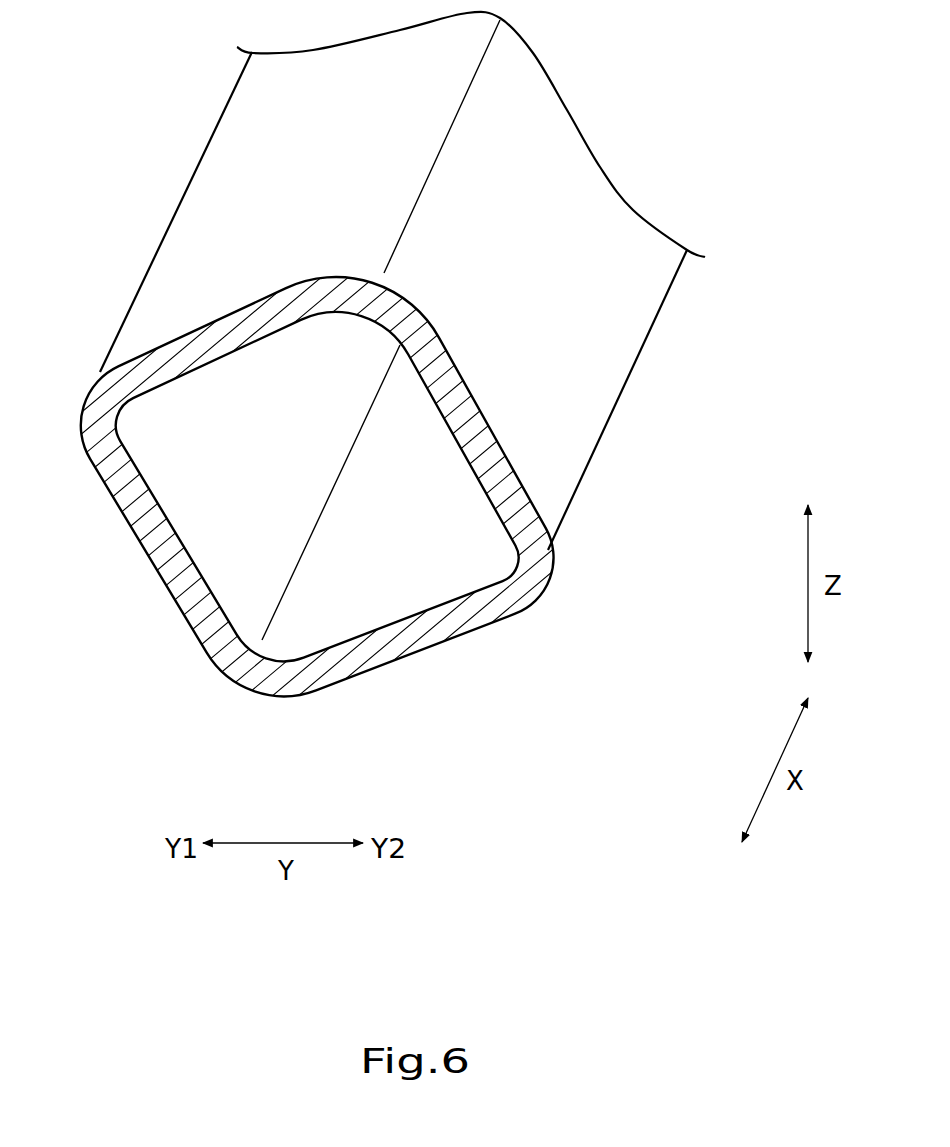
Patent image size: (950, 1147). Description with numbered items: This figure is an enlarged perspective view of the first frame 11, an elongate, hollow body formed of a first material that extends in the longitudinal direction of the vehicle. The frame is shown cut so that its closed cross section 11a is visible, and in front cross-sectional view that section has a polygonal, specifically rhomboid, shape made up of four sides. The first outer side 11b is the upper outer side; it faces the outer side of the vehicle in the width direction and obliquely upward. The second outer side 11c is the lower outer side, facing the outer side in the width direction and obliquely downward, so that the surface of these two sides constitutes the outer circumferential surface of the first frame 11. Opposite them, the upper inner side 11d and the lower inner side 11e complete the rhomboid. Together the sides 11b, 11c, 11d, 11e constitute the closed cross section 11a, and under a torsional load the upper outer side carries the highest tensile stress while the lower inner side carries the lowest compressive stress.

The first frame 11 is at (475, 456).
The closed cross section 11a is at (242, 676).
The first outer side 11b is at (222, 292).
The second outer side 11c is at (146, 560).
The upper inner side 11d is at (537, 378).
The lower inner side 11e is at (397, 660).